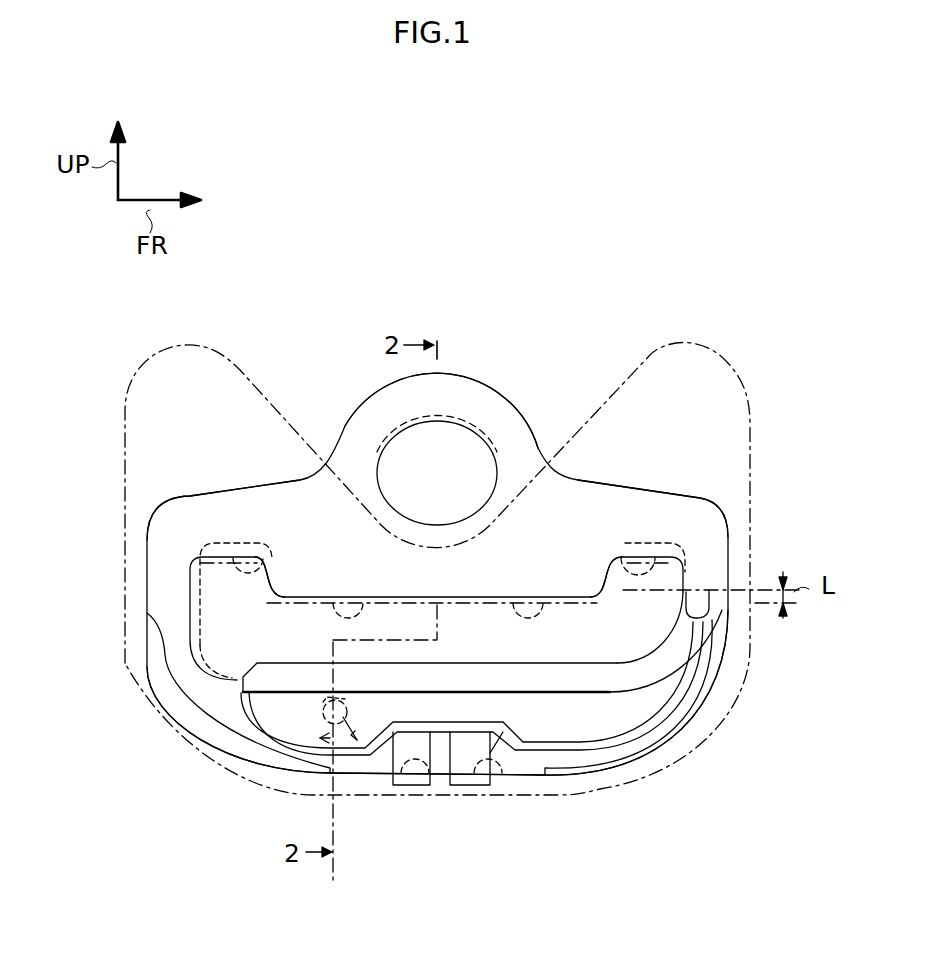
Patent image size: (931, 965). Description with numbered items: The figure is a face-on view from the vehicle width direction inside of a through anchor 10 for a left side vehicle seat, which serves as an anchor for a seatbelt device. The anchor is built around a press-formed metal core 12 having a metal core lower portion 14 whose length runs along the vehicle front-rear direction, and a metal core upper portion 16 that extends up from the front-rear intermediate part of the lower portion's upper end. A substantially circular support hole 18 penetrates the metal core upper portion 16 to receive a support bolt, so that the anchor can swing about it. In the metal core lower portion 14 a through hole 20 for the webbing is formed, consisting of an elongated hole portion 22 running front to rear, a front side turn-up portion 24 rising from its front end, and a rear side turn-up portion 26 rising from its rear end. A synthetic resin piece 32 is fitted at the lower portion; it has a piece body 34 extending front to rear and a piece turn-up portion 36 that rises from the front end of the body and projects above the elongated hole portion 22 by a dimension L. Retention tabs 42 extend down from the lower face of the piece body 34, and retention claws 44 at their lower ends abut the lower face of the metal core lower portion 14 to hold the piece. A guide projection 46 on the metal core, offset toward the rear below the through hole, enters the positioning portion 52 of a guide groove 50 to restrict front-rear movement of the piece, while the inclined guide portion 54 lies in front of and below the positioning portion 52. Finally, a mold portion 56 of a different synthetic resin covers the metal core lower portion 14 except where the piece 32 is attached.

The through anchor 10 is at (585, 305).
The metal core 12 is at (500, 391).
The metal core lower portion 14 is at (200, 510).
The metal core upper portion 16 is at (365, 423).
The support hole 18 is at (440, 436).
The through hole 20 is at (520, 604).
The elongated hole portion 22 is at (348, 603).
The front side turn-up portion 24 is at (628, 563).
The rear side turn-up portion 26 is at (263, 572).
The piece 32 is at (618, 723).
The piece body 34 is at (478, 662).
The piece turn-up portion 36 is at (702, 624).
The retention tabs 42 is at (413, 788).
The retention claws 44 is at (428, 783).
The guide projection 46 is at (350, 709).
The guide groove 50 is at (340, 752).
The positioning portion 52 is at (330, 701).
The guide portion 54 is at (353, 764).
The mold portion 56 is at (734, 711).